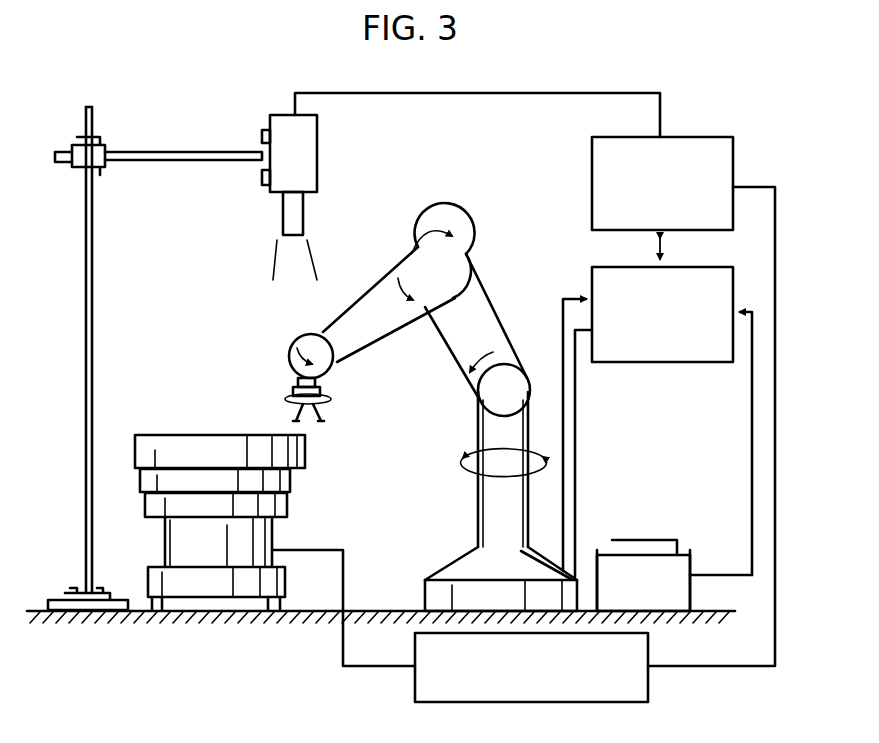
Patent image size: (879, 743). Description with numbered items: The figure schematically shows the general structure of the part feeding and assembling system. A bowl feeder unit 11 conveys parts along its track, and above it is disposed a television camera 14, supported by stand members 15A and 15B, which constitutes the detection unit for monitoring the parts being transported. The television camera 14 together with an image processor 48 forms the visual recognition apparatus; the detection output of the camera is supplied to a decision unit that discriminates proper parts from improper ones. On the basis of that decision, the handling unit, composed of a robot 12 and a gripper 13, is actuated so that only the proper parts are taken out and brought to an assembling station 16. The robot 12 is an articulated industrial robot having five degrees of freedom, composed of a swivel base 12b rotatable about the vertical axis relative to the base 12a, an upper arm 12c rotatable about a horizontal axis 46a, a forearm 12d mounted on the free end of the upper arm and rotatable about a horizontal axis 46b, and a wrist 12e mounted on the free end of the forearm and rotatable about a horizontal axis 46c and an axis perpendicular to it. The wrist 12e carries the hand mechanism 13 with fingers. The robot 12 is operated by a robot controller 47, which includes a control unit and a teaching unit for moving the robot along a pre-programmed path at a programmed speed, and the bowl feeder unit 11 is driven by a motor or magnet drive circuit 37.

The bowl feeder unit 11 is at (182, 442).
The robot 12 is at (412, 407).
The base 12a is at (452, 570).
The swivel base 12b is at (488, 502).
The upper arm 12c is at (483, 313).
The forearm 12d is at (380, 326).
The wrist 12e is at (318, 384).
The gripper 13 is at (325, 415).
The television camera 14 is at (305, 146).
The stand member 15A is at (210, 153).
The stand member 15B is at (93, 256).
The assembling station 16 is at (648, 573).
The motor or magnet drive circuit 37 is at (650, 680).
The horizontal axis 46a is at (503, 390).
The horizontal axis 46b is at (440, 267).
The horizontal axis 46c is at (297, 342).
The robot controller 47 is at (683, 363).
The image processor 48 is at (713, 137).